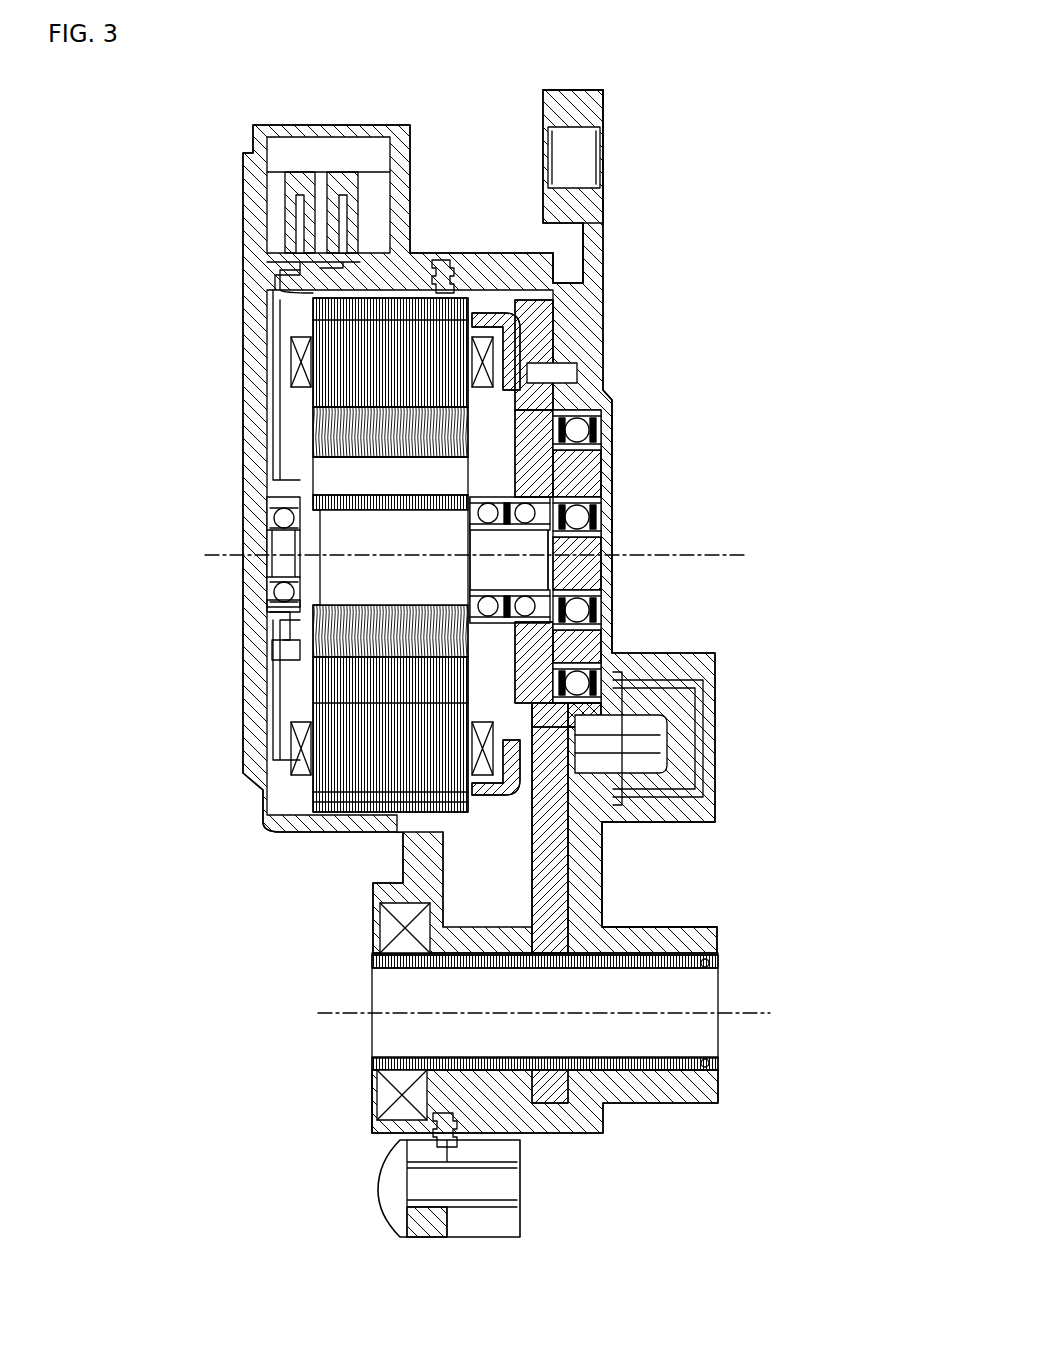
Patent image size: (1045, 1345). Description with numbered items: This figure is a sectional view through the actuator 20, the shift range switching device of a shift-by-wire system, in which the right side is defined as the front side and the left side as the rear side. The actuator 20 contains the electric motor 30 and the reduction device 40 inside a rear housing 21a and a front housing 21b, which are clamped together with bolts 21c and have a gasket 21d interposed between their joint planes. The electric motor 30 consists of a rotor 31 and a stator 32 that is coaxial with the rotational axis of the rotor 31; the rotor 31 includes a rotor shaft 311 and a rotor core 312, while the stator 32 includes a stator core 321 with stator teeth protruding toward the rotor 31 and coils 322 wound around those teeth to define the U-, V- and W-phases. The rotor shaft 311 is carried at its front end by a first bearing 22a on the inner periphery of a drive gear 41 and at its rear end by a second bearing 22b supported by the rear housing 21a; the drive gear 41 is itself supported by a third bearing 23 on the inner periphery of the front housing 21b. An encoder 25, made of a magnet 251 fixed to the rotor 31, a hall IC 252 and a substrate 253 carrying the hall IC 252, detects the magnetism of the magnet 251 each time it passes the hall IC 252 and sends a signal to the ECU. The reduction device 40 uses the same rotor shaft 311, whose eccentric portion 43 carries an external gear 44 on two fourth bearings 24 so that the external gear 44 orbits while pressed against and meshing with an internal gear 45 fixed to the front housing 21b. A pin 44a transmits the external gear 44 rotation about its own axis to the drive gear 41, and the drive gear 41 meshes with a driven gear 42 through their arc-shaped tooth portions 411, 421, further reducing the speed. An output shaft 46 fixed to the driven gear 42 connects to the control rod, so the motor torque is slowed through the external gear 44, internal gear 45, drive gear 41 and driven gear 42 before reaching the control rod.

The actuator 20 is at (638, 157).
The rear housing 21a is at (417, 253).
The front housing 21b is at (515, 253).
The bolts 21c is at (377, 1183).
The gasket 21d is at (443, 260).
The first bearing 22a is at (590, 517).
The second bearing 22b is at (275, 518).
The third bearing 23 is at (590, 430).
The fourth bearings 24 is at (532, 483).
The encoder 25 is at (207, 578).
The magnet 251 is at (270, 603).
The hall IC 252 is at (285, 620).
The substrate 253 is at (273, 653).
The electric motor 30 is at (289, 541).
The rotor 31 is at (286, 532).
The rotor shaft 311 is at (358, 522).
The rotor core 312 is at (333, 433).
The stator 32 is at (299, 555).
The stator core 321 is at (300, 330).
The coils 322 is at (296, 362).
The reduction device 40 is at (510, 830).
The drive gear 41 is at (590, 643).
The tooth portion 411 is at (607, 748).
The tooth portion 421 is at (566, 715).
The driven gear 42 is at (557, 858).
The eccentric portion 43 is at (520, 573).
The external gear 44 is at (577, 387).
The pin 44a is at (633, 693).
The internal gear 45 is at (550, 350).
The output shaft 46 is at (687, 1055).